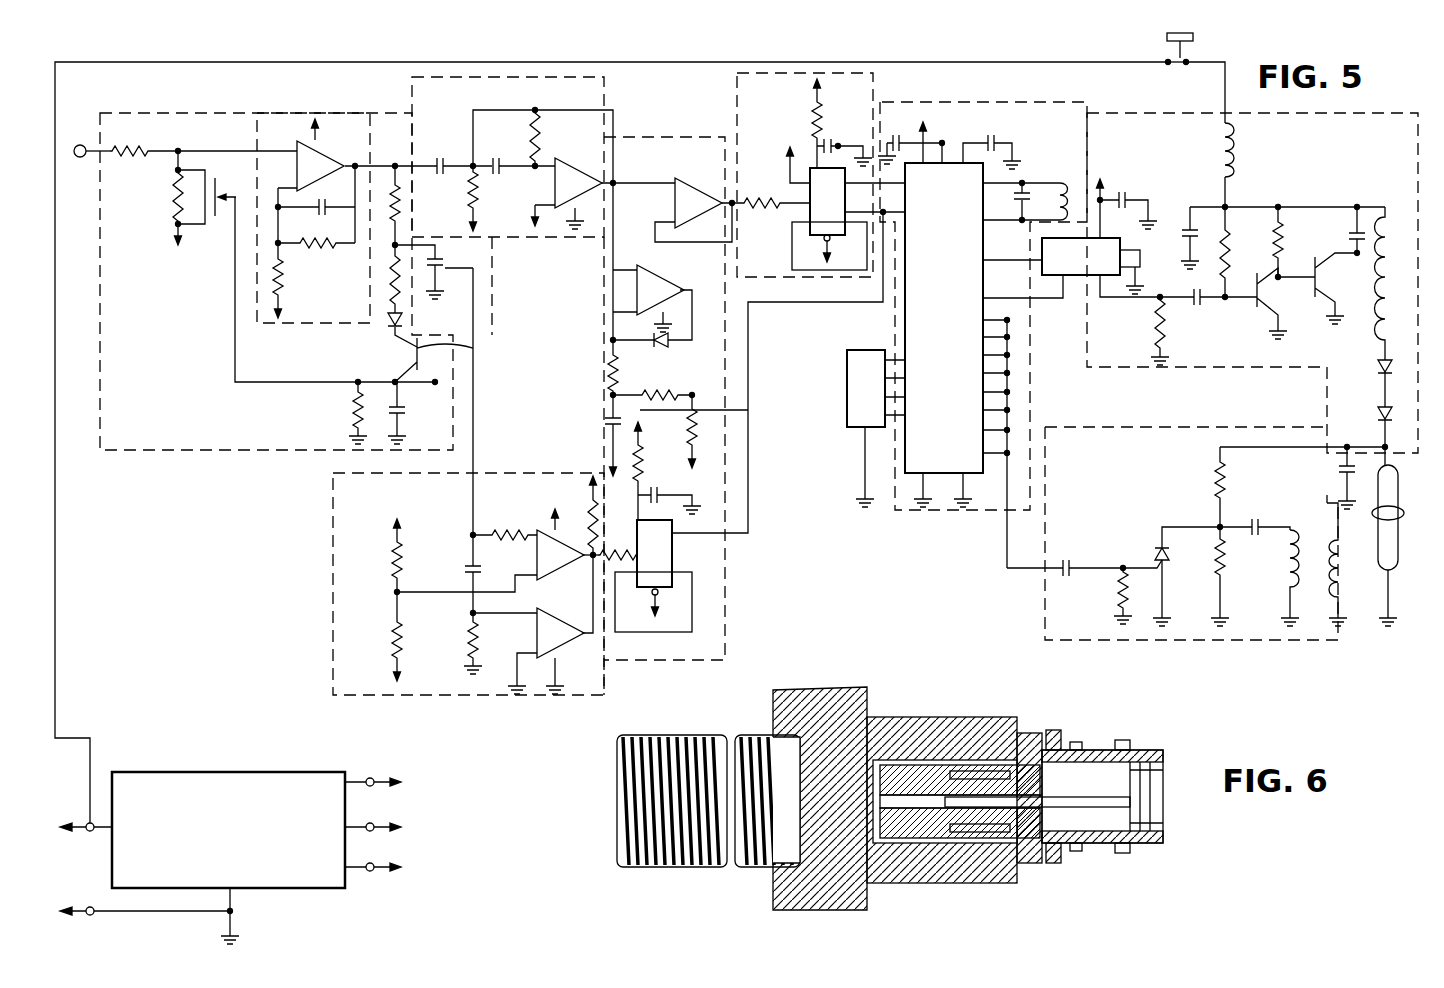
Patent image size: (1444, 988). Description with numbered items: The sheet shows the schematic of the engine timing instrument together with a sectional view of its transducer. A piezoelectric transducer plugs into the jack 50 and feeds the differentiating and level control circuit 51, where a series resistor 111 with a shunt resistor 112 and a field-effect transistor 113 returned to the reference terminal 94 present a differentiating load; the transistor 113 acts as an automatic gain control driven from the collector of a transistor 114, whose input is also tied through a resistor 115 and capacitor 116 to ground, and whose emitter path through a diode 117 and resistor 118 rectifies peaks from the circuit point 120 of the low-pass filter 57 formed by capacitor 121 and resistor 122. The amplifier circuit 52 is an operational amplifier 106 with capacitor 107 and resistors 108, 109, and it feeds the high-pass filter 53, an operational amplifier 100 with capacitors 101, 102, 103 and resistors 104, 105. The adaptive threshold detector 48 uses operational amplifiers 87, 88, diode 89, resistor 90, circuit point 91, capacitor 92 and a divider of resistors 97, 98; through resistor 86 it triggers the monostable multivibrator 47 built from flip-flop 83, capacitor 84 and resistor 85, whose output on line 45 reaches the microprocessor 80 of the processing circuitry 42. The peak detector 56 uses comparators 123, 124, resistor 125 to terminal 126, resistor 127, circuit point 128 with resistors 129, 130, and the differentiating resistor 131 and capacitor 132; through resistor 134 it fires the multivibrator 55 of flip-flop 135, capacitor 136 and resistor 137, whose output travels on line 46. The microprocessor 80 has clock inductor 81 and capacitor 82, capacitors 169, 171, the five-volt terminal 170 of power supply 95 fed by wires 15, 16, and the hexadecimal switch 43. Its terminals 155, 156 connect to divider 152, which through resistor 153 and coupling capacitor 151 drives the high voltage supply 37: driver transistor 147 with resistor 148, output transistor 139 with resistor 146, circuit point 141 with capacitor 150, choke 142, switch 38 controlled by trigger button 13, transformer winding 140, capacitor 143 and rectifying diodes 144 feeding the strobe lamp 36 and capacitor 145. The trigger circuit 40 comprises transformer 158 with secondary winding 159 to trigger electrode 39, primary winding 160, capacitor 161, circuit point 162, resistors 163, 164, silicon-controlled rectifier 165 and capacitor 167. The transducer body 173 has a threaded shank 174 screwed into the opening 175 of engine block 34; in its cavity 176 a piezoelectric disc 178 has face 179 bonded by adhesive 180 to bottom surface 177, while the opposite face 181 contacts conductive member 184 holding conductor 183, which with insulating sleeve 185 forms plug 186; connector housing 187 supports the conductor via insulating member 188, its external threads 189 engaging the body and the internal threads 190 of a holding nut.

In FIG. 5, the trigger switch button 13 is at (1194, 38).
In FIG. 5, the insulated wire 15 is at (88, 823).
In FIG. 5, the insulated wire 16 is at (88, 907).
In FIG. 6, the engine block 34 is at (848, 690).
In FIG. 5, the strobe lamp 36 is at (1398, 572).
In FIG. 5, the high voltage power supply 37 is at (1305, 125).
In FIG. 5, the switch 38 is at (1165, 48).
In FIG. 5, the trigger electrode 39 is at (1378, 526).
In FIG. 5, the trigger circuit 40 is at (1140, 430).
In FIG. 5, the processing circuitry 42 is at (1092, 118).
In FIG. 5, the switch 43 is at (850, 428).
In FIG. 5, the input line 45 is at (905, 181).
In FIG. 5, the input line 46 is at (820, 303).
In FIG. 5, the monostable multivibrator 47 is at (875, 90).
In FIG. 5, the adaptive threshold detector circuit 48 is at (638, 150).
In FIG. 5, the jack 50 is at (88, 146).
In FIG. 5, the differentiating and level control circuit 51 is at (207, 132).
In FIG. 5, the amplifier circuit 52 is at (346, 122).
In FIG. 5, the high-pass filter circuit 53 is at (604, 92).
In FIG. 5, the monostable multivibrator 55 is at (740, 648).
In FIG. 5, the peak detector circuit 56 is at (533, 472).
In FIG. 5, the low-pass filter circuit 57 is at (495, 297).
In FIG. 5, the microprocessor 80 is at (950, 476).
In FIG. 5, the inductor 81 is at (1060, 186).
In FIG. 5, the capacitor 82 is at (1028, 190).
In FIG. 5, the flip-flop 83 is at (895, 213).
In FIG. 5, the capacitor 84 is at (833, 140).
In FIG. 5, the resistor 85 is at (826, 112).
In FIG. 5, the resistor 86 is at (765, 210).
In FIG. 5, the operational amplifier 87 is at (688, 220).
In FIG. 5, the operational amplifier 88 is at (665, 282).
In FIG. 5, the diode 89 is at (663, 346).
In FIG. 5, the resistor 90 is at (612, 356).
In FIG. 5, the circuit point 91 is at (610, 390).
In FIG. 5, the capacitor 92 is at (612, 420).
In FIG. 5, the reference voltage terminal 94 is at (385, 870).
In FIG. 5, the power supply 95 is at (295, 890).
In FIG. 5, the resistor 97 is at (668, 394).
In FIG. 5, the resistor 98 is at (720, 428).
In FIG. 5, the operational amplifier 100 is at (560, 166).
In FIG. 5, the capacitor 101 is at (500, 158).
In FIG. 5, the capacitor 102 is at (485, 125).
In FIG. 5, the capacitor 103 is at (440, 158).
In FIG. 5, the resistor 104 is at (480, 192).
In FIG. 5, the resistor 105 is at (538, 136).
In FIG. 5, the operational amplifier 106 is at (316, 118).
In FIG. 5, the capacitor 107 is at (330, 207).
In FIG. 5, the resistor 108 is at (318, 246).
In FIG. 5, the resistor 109 is at (283, 280).
In FIG. 5, the resistor 111 is at (150, 148).
In FIG. 5, the resistor 112 is at (175, 200).
In FIG. 5, the field-effect transistor 113 is at (215, 215).
In FIG. 5, the transistor 114 is at (473, 345).
In FIG. 5, the resistor 115 is at (355, 402).
In FIG. 5, the capacitor 116 is at (400, 415).
In FIG. 5, the diode 117 is at (392, 326).
In FIG. 5, the resistor 118 is at (390, 278).
In FIG. 5, the circuit point 120 is at (400, 245).
In FIG. 5, the capacitor 121 is at (447, 268).
In FIG. 5, the resistor 122 is at (400, 200).
In FIG. 5, the comparator 123 is at (575, 570).
In FIG. 5, the comparator 124 is at (568, 642).
In FIG. 5, the resistor 125 is at (562, 526).
In FIG. 5, the power supply terminal 126 is at (373, 778).
In FIG. 5, the resistor 127 is at (505, 533).
In FIG. 5, the circuit point 128 is at (398, 592).
In FIG. 5, the resistor 129 is at (398, 642).
In FIG. 5, the resistor 130 is at (398, 556).
In FIG. 5, the resistor 131 is at (470, 660).
In FIG. 5, the capacitor 132 is at (485, 568).
In FIG. 5, the resistor 134 is at (595, 582).
In FIG. 5, the flip-flop 135 is at (672, 563).
In FIG. 5, the capacitor 136 is at (661, 495).
In FIG. 5, the resistor 137 is at (640, 472).
In FIG. 5, the output transistor 139 is at (1313, 308).
In FIG. 5, the transformer winding 140 is at (1386, 300).
In FIG. 5, the circuit point 141 is at (1226, 207).
In FIG. 5, the choke 142 is at (1237, 162).
In FIG. 5, the capacitor 143 is at (1360, 202).
In FIG. 5, the rectifying diodes 144 is at (1384, 408).
In FIG. 5, the capacitor 145 is at (1345, 472).
In FIG. 5, the resistor 146 is at (1283, 237).
In FIG. 5, the driver transistor 147 is at (1253, 312).
In FIG. 5, the resistor 148 is at (1230, 238).
In FIG. 5, the capacitor 150 is at (1188, 212).
In FIG. 5, the coupling capacitor 151 is at (1200, 304).
In FIG. 5, the divider circuit 152 is at (1088, 280).
In FIG. 5, the resistor 153 is at (1168, 333).
In FIG. 5, the microprocessor terminal 155 is at (983, 260).
In FIG. 5, the microprocessor terminal 156 is at (983, 298).
In FIG. 5, the transformer 158 is at (1320, 614).
In FIG. 5, the secondary winding 159 is at (1341, 582).
In FIG. 5, the primary winding 160 is at (1288, 572).
In FIG. 5, the capacitor 161 is at (1255, 543).
In FIG. 5, the circuit point 162 is at (1222, 527).
In FIG. 5, the resistor 163 is at (1226, 472).
In FIG. 5, the resistor 164 is at (1222, 577).
In FIG. 5, the silicon-controlled rectifier 165 is at (1158, 554).
In FIG. 5, the capacitor 167 is at (1070, 568).
In FIG. 5, the capacitor 169 is at (905, 142).
In FIG. 5, the +5 volt terminal 170 is at (378, 824).
In FIG. 5, the capacitor 171 is at (998, 137).
In FIG. 6, the body 173 is at (1025, 733).
In FIG. 6, the externally threaded shank portion 174 is at (778, 890).
In FIG. 6, the internally threaded opening 175 is at (890, 735).
In FIG. 6, the cavity 176 is at (1070, 845).
In FIG. 6, the bottom surface 177 is at (815, 900).
In FIG. 6, the disc 178 is at (905, 860).
In FIG. 6, the face 179 is at (885, 870).
In FIG. 6, the adhesive 180 is at (835, 895).
In FIG. 6, the opposite face 181 is at (950, 850).
In FIG. 6, the conductor 183 is at (1150, 760).
In FIG. 6, the conductive member 184 is at (995, 880).
In FIG. 6, the insulating sleeve 185 is at (960, 770).
In FIG. 6, the plug 186 is at (1022, 870).
In FIG. 6, the connector housing 187 is at (1158, 848).
In FIG. 6, the insulating member 188 is at (1122, 740).
In FIG. 6, the external threads 189 is at (1040, 863).
In FIG. 6, the internal threads 190 is at (1076, 742).